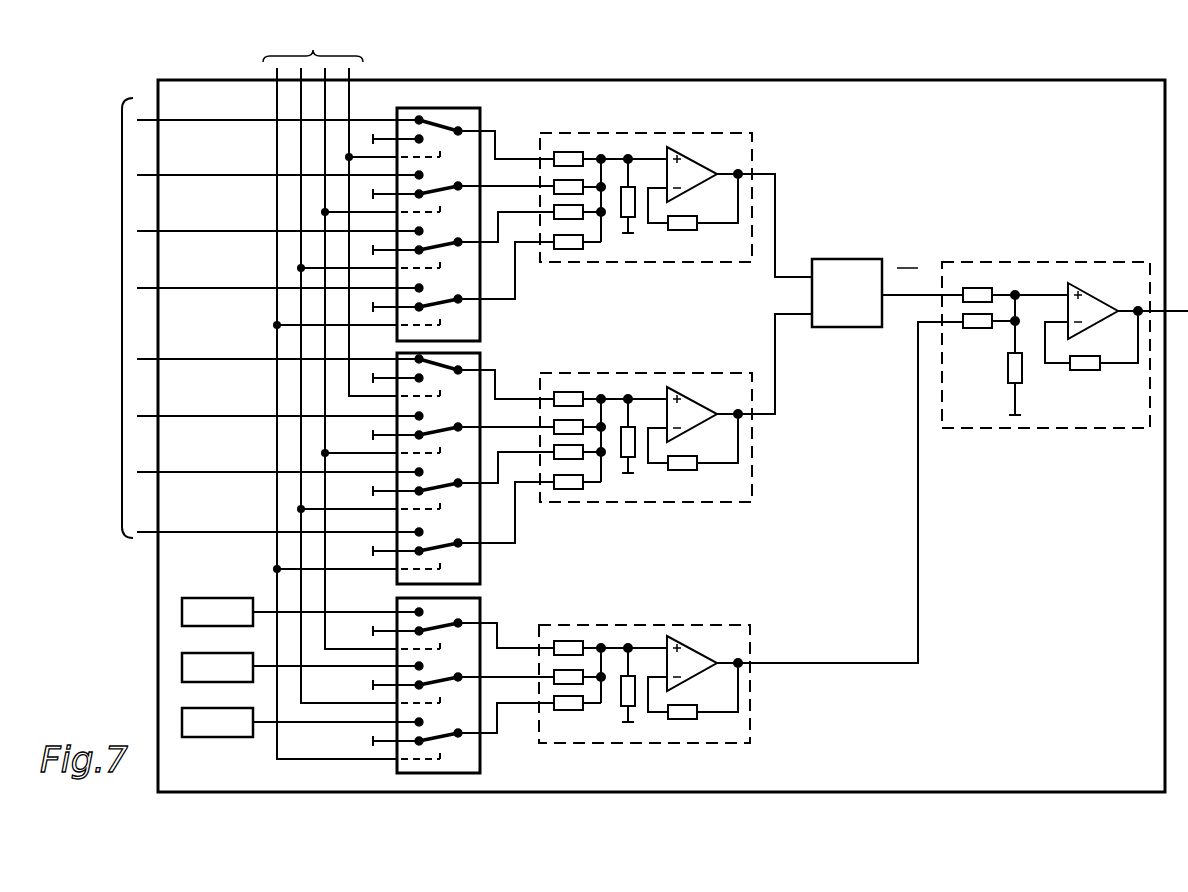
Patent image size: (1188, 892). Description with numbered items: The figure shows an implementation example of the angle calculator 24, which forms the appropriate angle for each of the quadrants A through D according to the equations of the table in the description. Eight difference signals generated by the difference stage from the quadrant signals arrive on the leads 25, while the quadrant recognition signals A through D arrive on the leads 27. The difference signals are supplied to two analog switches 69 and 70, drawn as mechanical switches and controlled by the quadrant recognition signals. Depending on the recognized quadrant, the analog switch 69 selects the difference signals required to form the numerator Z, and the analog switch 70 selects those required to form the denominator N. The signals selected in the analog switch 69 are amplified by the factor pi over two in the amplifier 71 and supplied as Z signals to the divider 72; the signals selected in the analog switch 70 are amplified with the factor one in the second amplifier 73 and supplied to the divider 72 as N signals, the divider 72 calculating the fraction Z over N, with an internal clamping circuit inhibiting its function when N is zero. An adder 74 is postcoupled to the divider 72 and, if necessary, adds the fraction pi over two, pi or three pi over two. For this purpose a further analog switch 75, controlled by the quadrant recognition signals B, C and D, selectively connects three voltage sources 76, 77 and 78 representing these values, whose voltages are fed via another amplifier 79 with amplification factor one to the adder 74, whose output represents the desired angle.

The angle calculator 24 is at (946, 98).
The leads 25 is at (121, 350).
The leads 27 is at (330, 391).
The analog switch 69 is at (474, 124).
The analog switch 70 is at (474, 361).
The amplifier 71 is at (728, 153).
The divider 72 is at (832, 278).
The second amplifier 73 is at (640, 385).
The adder 74 is at (1074, 414).
The further analog switch 75 is at (470, 611).
The voltage source 76 is at (192, 606).
The voltage source 77 is at (196, 668).
The voltage source 78 is at (206, 732).
The amplifier 79 is at (698, 636).